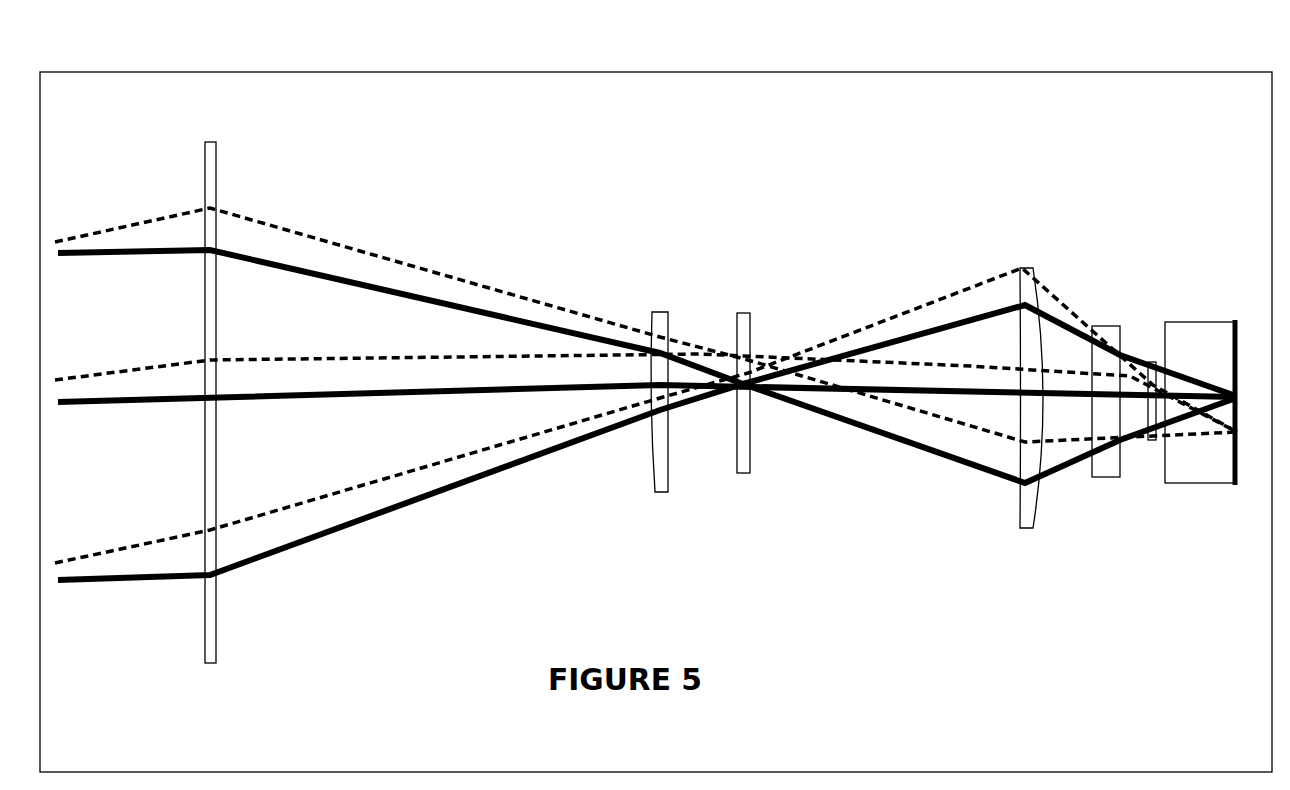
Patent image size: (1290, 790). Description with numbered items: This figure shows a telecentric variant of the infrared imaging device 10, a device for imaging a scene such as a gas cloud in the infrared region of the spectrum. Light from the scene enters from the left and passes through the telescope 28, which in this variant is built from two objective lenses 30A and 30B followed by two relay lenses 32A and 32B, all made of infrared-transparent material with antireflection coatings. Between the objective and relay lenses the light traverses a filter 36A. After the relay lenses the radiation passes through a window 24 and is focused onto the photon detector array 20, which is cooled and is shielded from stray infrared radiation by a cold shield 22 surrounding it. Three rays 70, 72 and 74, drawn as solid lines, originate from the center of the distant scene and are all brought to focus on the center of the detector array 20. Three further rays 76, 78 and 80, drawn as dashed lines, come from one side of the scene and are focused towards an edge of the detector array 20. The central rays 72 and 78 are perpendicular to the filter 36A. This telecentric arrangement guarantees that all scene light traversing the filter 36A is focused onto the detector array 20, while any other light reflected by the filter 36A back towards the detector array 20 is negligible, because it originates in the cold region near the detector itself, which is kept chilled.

The first embodiment of imaging device 10 is at (977, 88).
The photon detector array 20 is at (1233, 447).
The cold shield 22 is at (1202, 322).
The window 24 is at (1149, 440).
The telescope 28 is at (439, 375).
The first objective lens 30A is at (216, 170).
The second objective lens 30B is at (658, 312).
The first relay lens 32A is at (1022, 268).
The second relay lens 32B is at (1102, 326).
The filter 36A is at (748, 313).
The ray from center of scene 70 is at (148, 255).
The central ray from center of scene 72 is at (170, 405).
The ray from center of scene 74 is at (167, 580).
The ray from side of scene 76 is at (475, 282).
The central ray from side of scene 78 is at (317, 365).
The ray from side of scene 80 is at (327, 502).